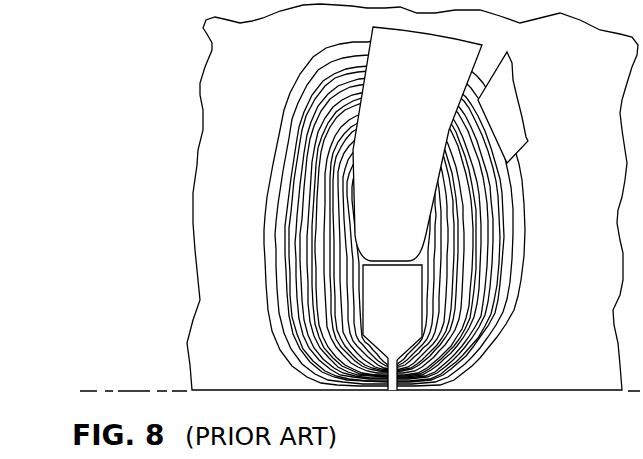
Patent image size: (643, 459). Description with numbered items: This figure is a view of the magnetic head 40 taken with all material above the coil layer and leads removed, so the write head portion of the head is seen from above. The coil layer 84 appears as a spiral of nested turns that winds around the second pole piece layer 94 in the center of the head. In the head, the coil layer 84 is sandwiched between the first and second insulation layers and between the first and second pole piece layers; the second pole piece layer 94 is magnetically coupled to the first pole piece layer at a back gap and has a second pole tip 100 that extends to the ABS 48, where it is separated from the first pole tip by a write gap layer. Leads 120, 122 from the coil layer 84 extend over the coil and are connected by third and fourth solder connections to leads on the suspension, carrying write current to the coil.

The magnetic head 40 is at (541, 192).
The coil layer 84 is at (498, 287).
The second pole piece layer 94 is at (405, 317).
The second pole tip 100 is at (393, 392).
The lead 120 is at (422, 141).
The lead 122 is at (513, 100).
The ABS 48 is at (134, 391).